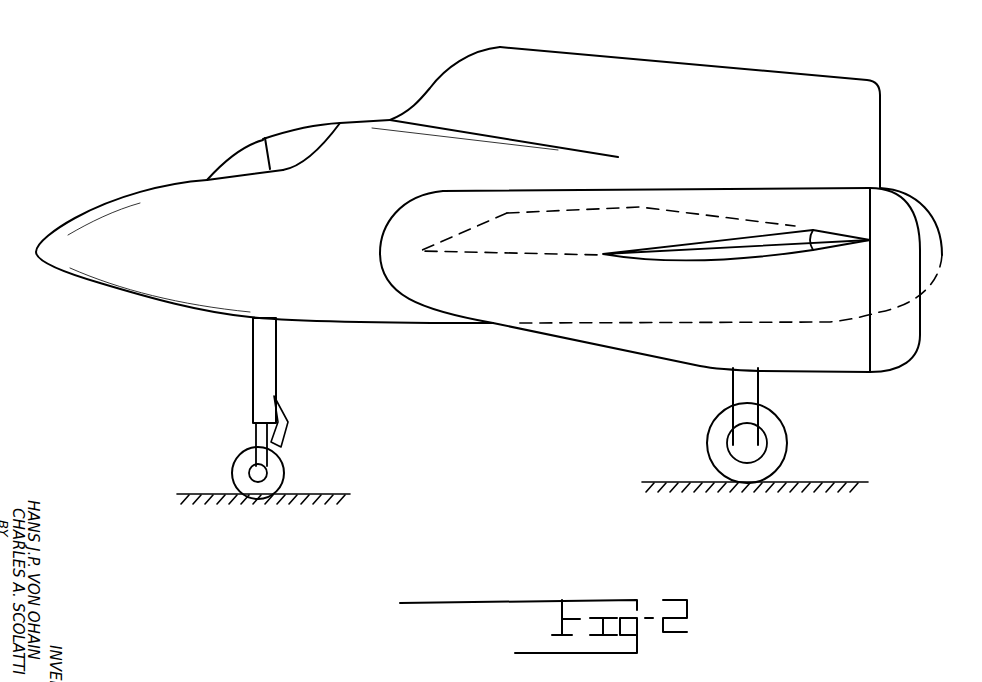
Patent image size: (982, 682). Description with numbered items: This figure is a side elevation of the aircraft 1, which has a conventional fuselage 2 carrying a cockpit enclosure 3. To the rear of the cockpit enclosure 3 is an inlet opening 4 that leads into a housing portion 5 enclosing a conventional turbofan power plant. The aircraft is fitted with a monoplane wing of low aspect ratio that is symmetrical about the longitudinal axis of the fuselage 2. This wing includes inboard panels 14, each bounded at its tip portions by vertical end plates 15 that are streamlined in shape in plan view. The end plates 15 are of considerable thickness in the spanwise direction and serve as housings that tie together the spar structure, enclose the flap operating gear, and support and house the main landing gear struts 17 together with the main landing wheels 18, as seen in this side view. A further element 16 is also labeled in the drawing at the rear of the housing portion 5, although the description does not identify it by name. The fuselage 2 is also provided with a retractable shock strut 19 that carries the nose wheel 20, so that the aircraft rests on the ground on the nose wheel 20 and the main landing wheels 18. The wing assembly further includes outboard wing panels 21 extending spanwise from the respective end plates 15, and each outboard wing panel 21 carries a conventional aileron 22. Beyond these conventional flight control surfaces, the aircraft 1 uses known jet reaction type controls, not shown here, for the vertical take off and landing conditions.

The aircraft 1 is at (117, 196).
The fuselage 2 is at (374, 321).
The cockpit enclosure 3 is at (246, 148).
The inlet opening 4 is at (420, 104).
The housing portion 5 is at (738, 66).
The inboard panels 14 is at (472, 224).
The vertical end plates 15 is at (665, 300).
The exhaust nozzle 16 is at (912, 349).
The main landing gear struts 17 is at (738, 390).
The main landing wheels 18 is at (788, 435).
The retractable shock strut 19 is at (257, 365).
The nose wheel 20 is at (284, 465).
The outboard wing panels 21 is at (757, 255).
The aileron 22 is at (835, 249).